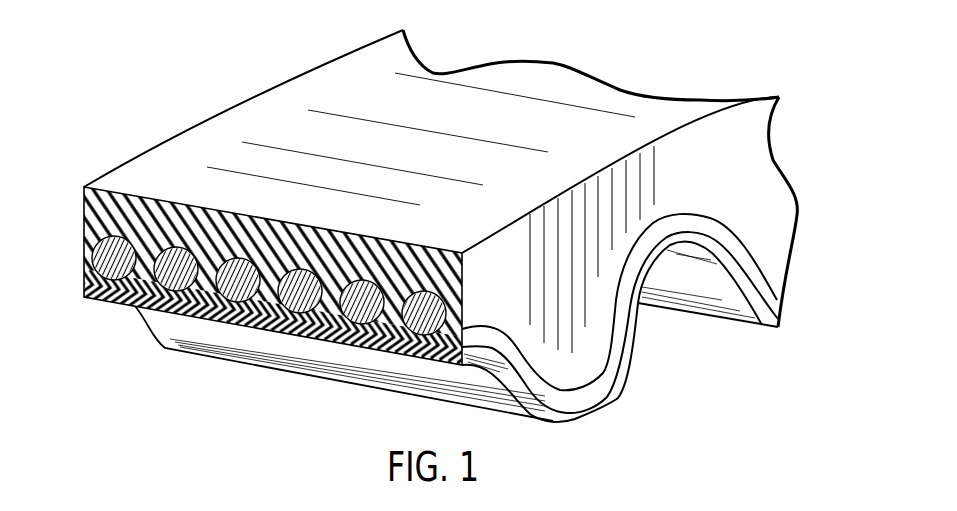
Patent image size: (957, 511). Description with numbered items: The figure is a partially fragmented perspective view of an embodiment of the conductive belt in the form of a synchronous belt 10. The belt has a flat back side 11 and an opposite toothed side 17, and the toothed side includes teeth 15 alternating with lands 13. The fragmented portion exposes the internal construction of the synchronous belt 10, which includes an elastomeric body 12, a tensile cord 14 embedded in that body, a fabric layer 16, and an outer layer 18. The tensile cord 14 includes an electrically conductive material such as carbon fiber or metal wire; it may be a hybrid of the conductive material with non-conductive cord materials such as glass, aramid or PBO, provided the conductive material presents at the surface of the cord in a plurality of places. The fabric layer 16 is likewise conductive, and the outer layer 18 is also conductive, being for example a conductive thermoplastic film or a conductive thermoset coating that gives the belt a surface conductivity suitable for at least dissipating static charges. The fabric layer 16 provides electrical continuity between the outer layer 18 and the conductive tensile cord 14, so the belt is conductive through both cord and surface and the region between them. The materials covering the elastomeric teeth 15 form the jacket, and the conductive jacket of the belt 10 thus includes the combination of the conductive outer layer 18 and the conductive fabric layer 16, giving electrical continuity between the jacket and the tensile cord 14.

The synchronous belt 10 is at (700, 58).
The flat back side 11 is at (590, 95).
The elastomeric body 12 is at (137, 217).
The lands 13 is at (658, 257).
The tensile cord 14 is at (97, 248).
The teeth 15 is at (573, 368).
The fabric layer 16 is at (85, 288).
The toothed side 17 is at (597, 408).
The outer layer 18 is at (197, 318).